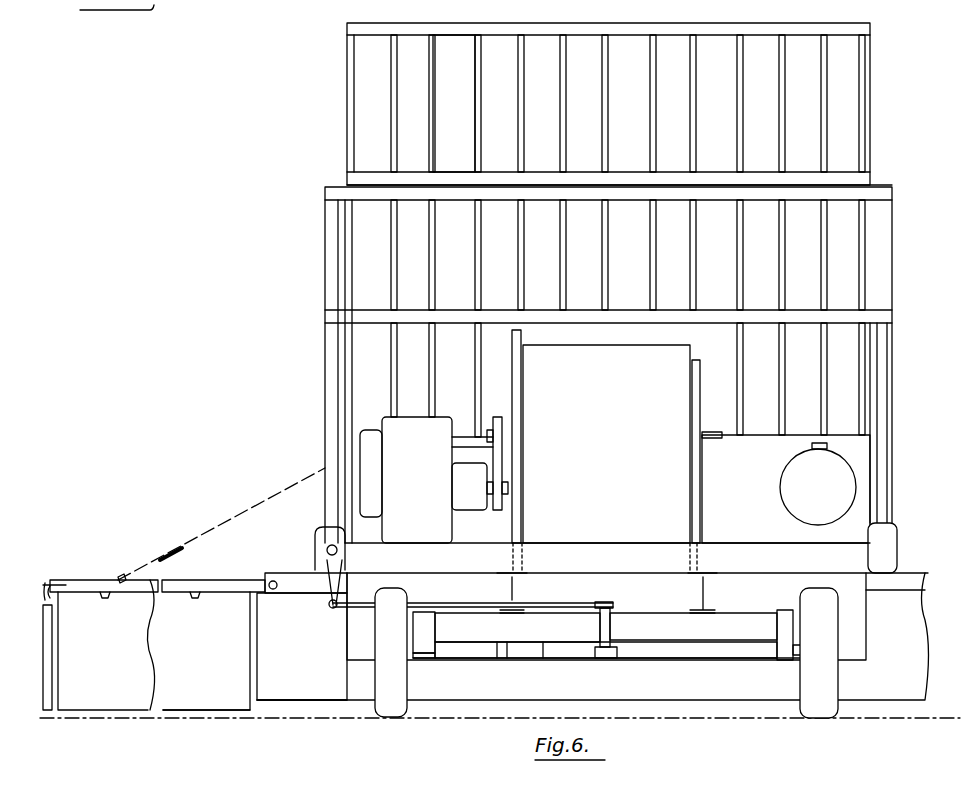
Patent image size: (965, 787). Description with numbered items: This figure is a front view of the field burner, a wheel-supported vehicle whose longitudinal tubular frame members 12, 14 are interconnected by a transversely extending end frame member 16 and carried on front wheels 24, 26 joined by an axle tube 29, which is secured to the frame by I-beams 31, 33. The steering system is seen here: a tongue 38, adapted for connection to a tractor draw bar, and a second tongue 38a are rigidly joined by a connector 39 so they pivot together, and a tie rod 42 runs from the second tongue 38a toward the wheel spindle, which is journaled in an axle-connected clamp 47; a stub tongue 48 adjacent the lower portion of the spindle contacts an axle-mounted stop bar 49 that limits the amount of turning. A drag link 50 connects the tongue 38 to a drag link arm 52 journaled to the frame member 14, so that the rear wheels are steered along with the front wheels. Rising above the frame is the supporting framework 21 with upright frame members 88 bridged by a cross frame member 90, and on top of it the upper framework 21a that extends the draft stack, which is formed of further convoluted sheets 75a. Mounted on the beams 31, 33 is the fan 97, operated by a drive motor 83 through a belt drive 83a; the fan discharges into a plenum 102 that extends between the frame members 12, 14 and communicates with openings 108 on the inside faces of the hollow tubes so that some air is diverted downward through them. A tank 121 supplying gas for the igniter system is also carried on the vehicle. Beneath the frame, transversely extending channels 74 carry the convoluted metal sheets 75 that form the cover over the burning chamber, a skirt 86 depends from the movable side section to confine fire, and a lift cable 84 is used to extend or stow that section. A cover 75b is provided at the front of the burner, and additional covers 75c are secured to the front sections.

The frame member 12 is at (886, 530).
The frame member 14 is at (316, 532).
The end frame member 16 is at (748, 550).
The supporting framework 21 is at (310, 261).
The upper framework 21a is at (332, 114).
The front wheel 24 is at (820, 715).
The front wheel 26 is at (393, 710).
The axle tube 29 is at (684, 623).
The I-beam 31 is at (708, 592).
The I-beam 33 is at (520, 592).
The tongue 38 is at (607, 606).
The second tongue 38a is at (614, 660).
The connector 39 is at (612, 625).
The tie rod 42 is at (562, 660).
The axle connected clamp 47 is at (413, 635).
The block base 48 is at (430, 658).
The stop bar 49 is at (524, 645).
The drag link 50 is at (465, 612).
The drag link arm 52 is at (318, 563).
The channel 74 is at (305, 593).
The convoluted metal sheet 75 is at (172, 604).
The convoluted sheet 75a is at (452, 52).
The cover 75b is at (312, 695).
The cover 75c is at (195, 693).
The drive motor 83 is at (428, 510).
The belt drive 83a is at (502, 465).
The lift cable 84 is at (228, 520).
The skirt 86 is at (52, 618).
The upright frame member 88 is at (328, 345).
The cross frame member 90 is at (870, 190).
The fan 97 is at (606, 444).
The plenum 102 is at (352, 452).
The opening 108 is at (340, 555).
The tank 121 is at (856, 480).